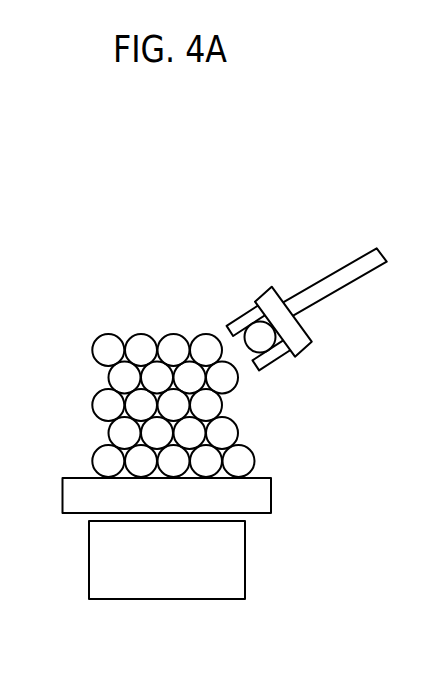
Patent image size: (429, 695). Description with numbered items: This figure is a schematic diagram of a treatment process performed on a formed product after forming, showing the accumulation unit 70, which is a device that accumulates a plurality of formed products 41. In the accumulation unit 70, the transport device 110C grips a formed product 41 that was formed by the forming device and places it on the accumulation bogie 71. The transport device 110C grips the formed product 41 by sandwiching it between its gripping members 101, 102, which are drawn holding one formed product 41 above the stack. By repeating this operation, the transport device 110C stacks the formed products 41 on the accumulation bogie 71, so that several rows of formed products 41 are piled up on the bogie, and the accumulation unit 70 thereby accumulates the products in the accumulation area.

The accumulation unit 70 is at (62, 302).
The formed product 41 is at (108, 336).
The accumulation bogie 71 is at (75, 477).
The gripping member 101 is at (243, 313).
The gripping member 102 is at (275, 365).
The transport device 110C is at (345, 293).